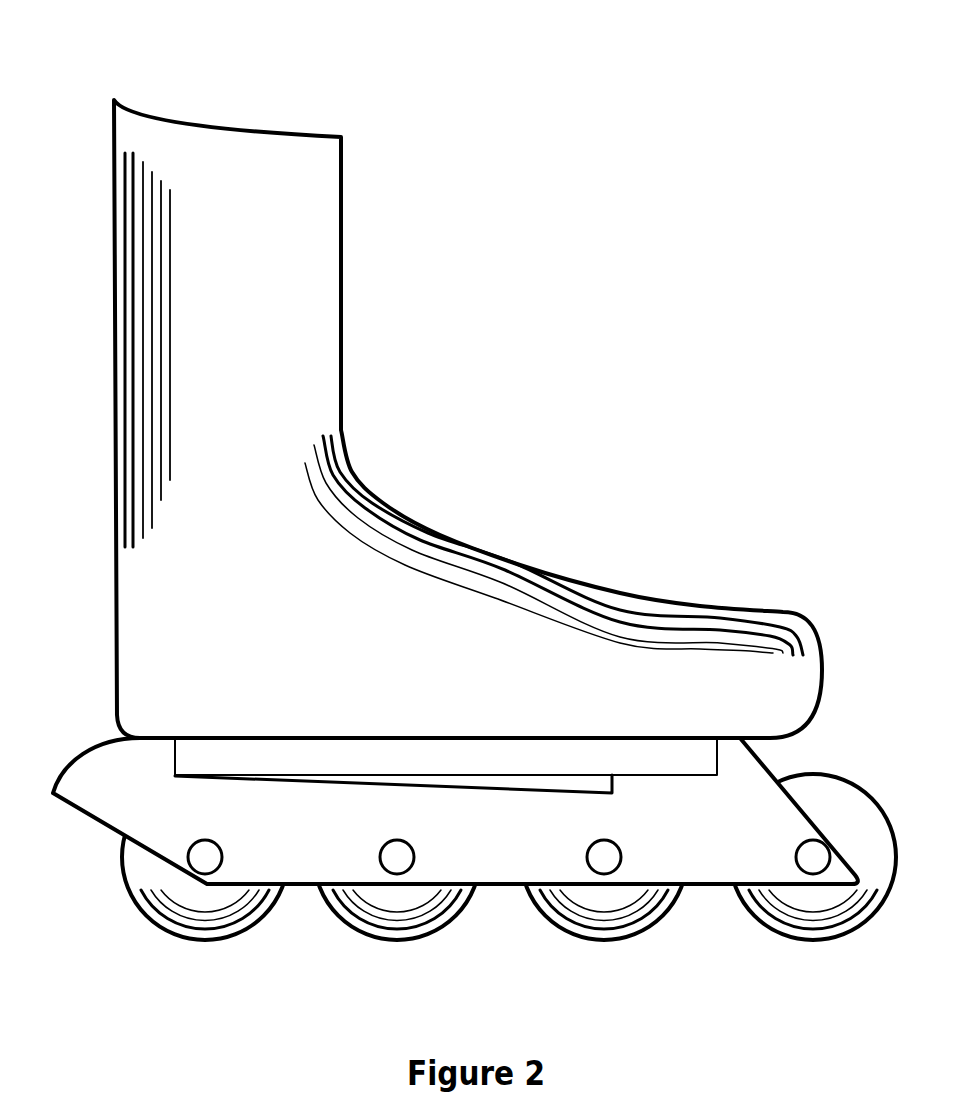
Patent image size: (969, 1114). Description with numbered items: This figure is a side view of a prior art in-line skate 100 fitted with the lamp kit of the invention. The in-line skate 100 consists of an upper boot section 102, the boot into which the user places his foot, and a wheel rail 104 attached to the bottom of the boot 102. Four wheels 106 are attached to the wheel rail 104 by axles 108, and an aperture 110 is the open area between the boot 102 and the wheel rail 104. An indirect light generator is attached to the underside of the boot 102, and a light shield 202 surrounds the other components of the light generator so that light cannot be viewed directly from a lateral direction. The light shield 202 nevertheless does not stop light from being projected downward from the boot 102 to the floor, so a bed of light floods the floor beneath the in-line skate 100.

The in-line skate 100 is at (503, 443).
The upper boot section 102 is at (201, 155).
The wheel rail 104 is at (113, 765).
The wheels 106 is at (420, 893).
The axles 108 is at (380, 857).
The aperture 110 is at (547, 782).
The light shield 202 is at (347, 748).